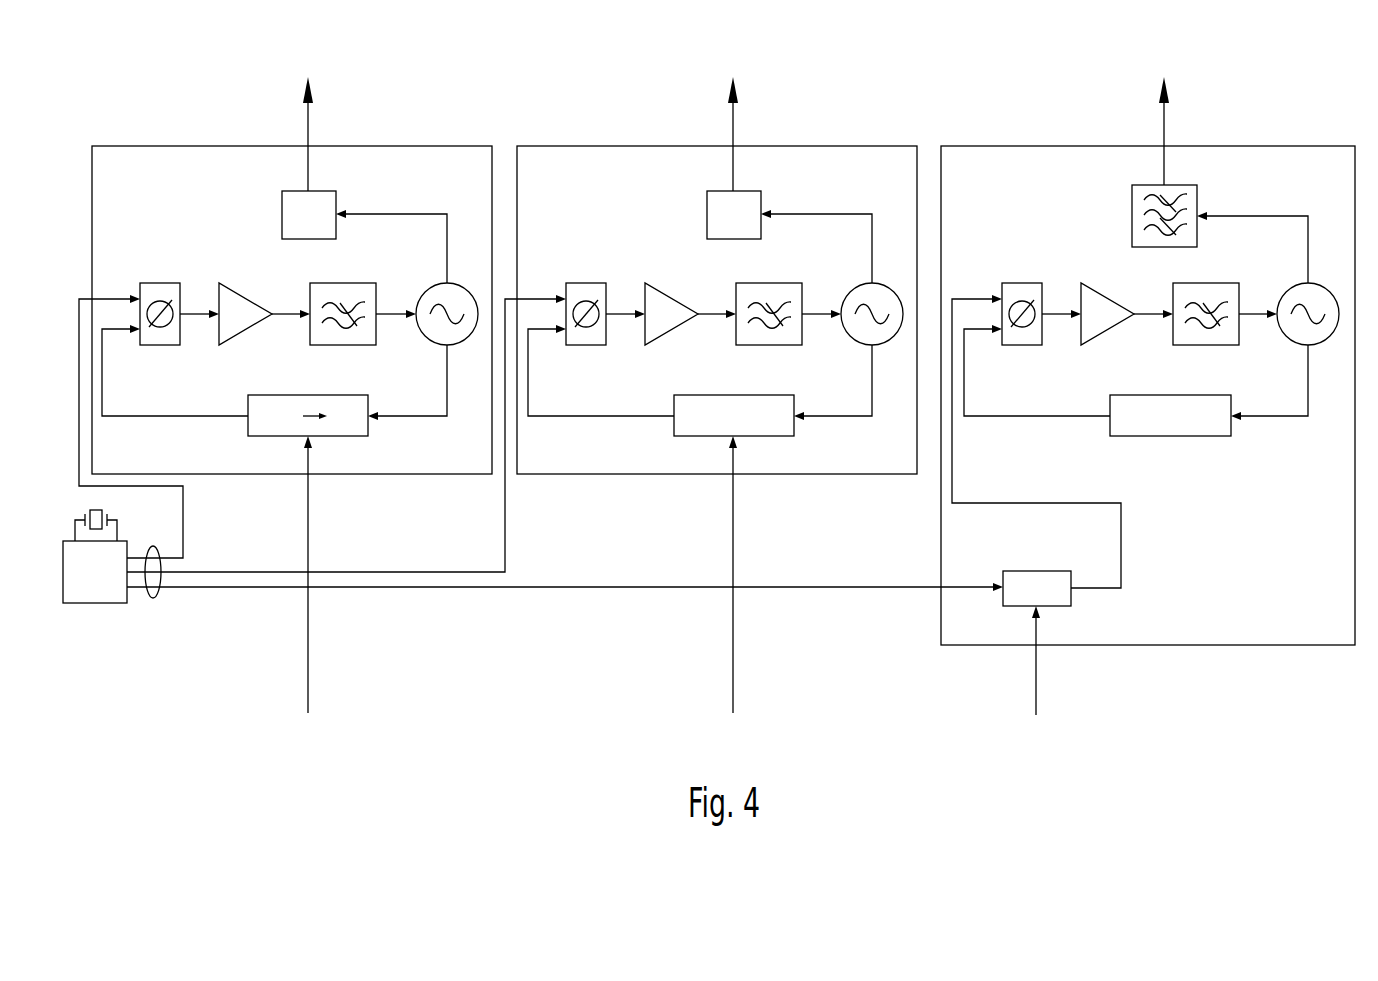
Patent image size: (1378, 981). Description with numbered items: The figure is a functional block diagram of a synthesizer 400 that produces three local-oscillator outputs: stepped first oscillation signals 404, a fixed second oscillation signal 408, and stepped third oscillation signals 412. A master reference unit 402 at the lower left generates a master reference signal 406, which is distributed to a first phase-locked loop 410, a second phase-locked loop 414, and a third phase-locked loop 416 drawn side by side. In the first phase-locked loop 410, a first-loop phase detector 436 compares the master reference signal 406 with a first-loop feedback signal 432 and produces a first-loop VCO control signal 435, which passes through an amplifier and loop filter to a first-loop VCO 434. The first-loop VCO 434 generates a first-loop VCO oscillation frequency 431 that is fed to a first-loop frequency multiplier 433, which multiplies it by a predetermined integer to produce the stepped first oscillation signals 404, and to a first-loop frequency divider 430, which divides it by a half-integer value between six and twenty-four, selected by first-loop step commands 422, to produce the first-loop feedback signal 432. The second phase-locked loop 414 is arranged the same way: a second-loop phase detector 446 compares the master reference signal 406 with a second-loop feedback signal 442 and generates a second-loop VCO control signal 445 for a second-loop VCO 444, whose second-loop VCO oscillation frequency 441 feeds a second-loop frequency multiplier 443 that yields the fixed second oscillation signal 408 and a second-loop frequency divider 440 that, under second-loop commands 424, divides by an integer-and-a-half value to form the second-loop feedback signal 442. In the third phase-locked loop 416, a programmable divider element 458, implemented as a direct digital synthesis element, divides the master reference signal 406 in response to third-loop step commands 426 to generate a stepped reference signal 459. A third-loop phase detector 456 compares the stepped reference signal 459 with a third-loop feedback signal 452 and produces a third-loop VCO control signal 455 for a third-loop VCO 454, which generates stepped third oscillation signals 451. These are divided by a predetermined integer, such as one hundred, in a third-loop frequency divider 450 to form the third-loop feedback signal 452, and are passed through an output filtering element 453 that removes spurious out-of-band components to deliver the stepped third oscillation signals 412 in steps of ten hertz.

The synthesizer 400 is at (162, 43).
The master reference unit 402 is at (95, 605).
The stepped first oscillation signals 404 is at (306, 124).
The master reference signal 406 is at (152, 600).
The fixed second oscillation signal 408 is at (732, 124).
The first phase-locked loop 410 is at (473, 146).
The stepped third oscillation signals 412 is at (1164, 124).
The second phase-locked loop 414 is at (898, 146).
The third phase-locked loop 416 is at (1334, 146).
The first-loop step commands 422 is at (308, 684).
The second-loop commands 424 is at (733, 684).
The third-loop step commands 426 is at (1035, 684).
The first-loop frequency divider 430 is at (323, 395).
The first-loop VCO oscillation frequency 431 is at (400, 214).
The first-loop feedback signal 432 is at (102, 373).
The first-loop frequency multiplier 433 is at (323, 191).
The first-loop VCO 434 is at (426, 292).
The first-loop VCO control signal 435 is at (393, 318).
The first-loop phase detector 436 is at (170, 287).
The second-loop frequency divider 440 is at (748, 395).
The second-loop VCO oscillation frequency 441 is at (825, 214).
The second-loop feedback signal 442 is at (527, 373).
The second-loop frequency multiplier 443 is at (748, 191).
The second-loop VCO 444 is at (850, 292).
The second-loop VCO control signal 445 is at (818, 318).
The second-loop phase detector 446 is at (595, 287).
The third-loop frequency divider 450 is at (1184, 395).
The stepped third oscillation signals 451 is at (1262, 216).
The third-loop feedback signal 452 is at (964, 373).
The output filtering element 453 is at (1179, 185).
The third-loop VCO 454 is at (1288, 292).
The third-loop VCO control signal 455 is at (1254, 318).
The third-loop phase detector 456 is at (1031, 287).
The programmable divider element 458 is at (1061, 571).
The stepped reference signal 459 is at (1036, 504).